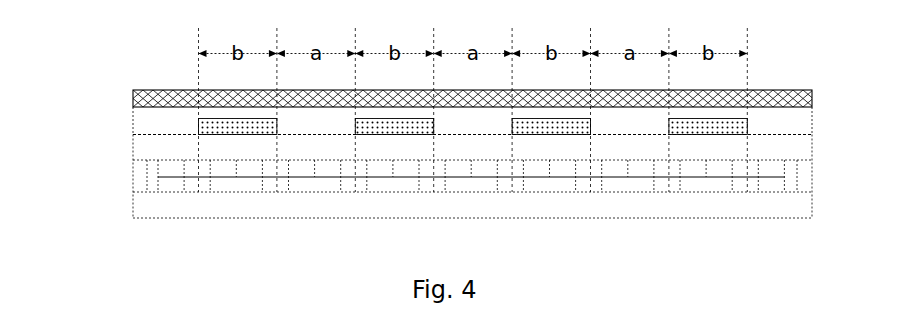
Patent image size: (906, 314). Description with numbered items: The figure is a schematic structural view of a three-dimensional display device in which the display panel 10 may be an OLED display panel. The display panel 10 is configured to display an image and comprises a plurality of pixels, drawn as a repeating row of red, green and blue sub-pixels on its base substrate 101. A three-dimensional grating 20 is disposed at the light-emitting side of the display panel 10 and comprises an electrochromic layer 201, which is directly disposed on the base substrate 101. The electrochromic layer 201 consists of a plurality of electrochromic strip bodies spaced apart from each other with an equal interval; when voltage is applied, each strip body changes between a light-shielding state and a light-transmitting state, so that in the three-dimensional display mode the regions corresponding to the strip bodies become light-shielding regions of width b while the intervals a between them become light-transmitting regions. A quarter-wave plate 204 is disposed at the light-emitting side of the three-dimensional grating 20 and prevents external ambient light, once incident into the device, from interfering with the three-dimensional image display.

The display panel 10 is at (448, 177).
The 3D grating 20 is at (816, 90).
The base substrate 101 is at (133, 147).
The electrochromic layer 201 is at (198, 127).
The quarter-wave plate 204 is at (133, 98).